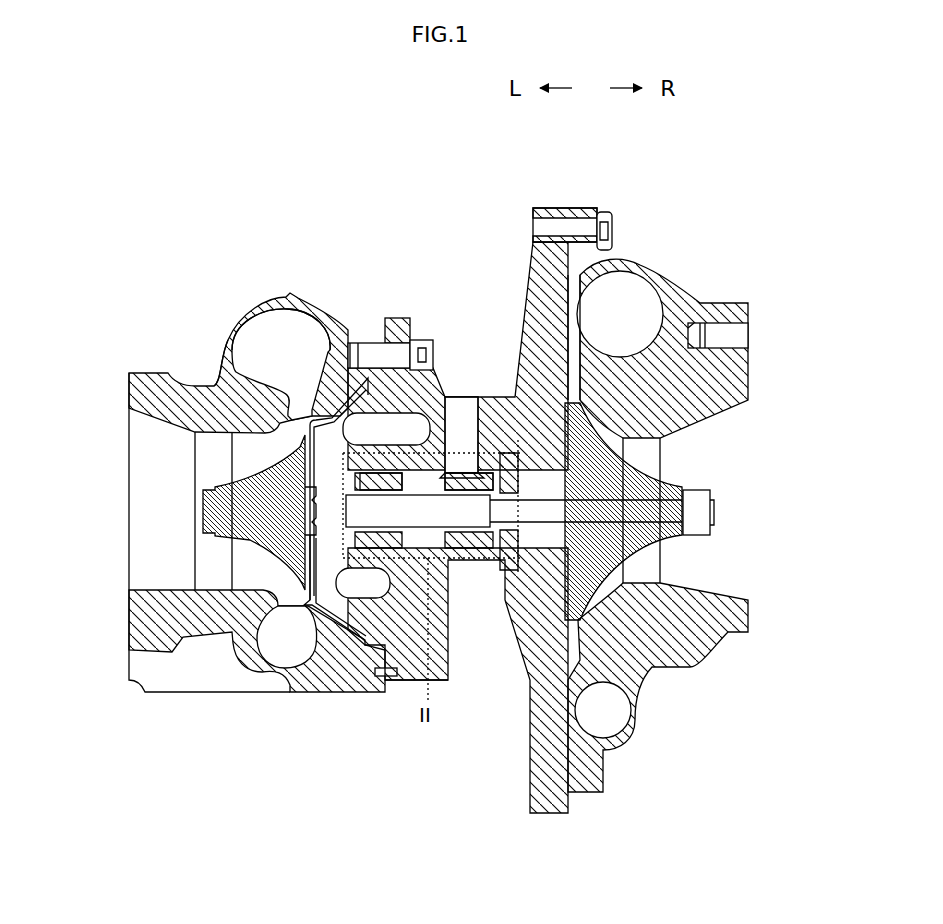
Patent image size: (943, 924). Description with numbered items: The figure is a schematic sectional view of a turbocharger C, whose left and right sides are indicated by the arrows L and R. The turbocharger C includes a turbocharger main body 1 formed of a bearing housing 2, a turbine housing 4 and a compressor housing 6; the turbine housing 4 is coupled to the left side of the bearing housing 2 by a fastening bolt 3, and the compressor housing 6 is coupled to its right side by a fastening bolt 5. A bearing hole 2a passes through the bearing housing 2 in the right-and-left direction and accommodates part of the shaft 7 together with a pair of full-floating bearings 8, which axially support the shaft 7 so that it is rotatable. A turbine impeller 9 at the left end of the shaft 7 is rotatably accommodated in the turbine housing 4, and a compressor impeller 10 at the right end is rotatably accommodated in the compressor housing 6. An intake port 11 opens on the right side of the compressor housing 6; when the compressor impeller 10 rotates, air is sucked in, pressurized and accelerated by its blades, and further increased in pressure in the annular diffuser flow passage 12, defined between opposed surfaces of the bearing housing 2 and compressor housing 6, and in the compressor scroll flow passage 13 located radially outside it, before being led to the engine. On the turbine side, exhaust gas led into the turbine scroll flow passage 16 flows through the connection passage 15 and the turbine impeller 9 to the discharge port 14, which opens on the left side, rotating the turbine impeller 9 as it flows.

The turbocharger main body 1 is at (197, 216).
The turbocharger C is at (150, 148).
The bearing housing 2 is at (440, 398).
The bearing hole 2a is at (437, 537).
The fastening bolt 3 is at (424, 342).
The turbine housing 4 is at (322, 316).
The fastening bolt 5 is at (600, 212).
The compressor housing 6 is at (720, 322).
The shaft 7 is at (416, 525).
The full-floating bearings 8 is at (456, 468).
The turbine impeller 9 is at (300, 530).
The compressor impeller 10 is at (643, 482).
The intake port 11 is at (748, 396).
The diffuser flow passage 12 is at (583, 337).
The compressor scroll flow passage 13 is at (635, 296).
The discharge port 14 is at (128, 410).
The connection passage 15 is at (287, 388).
The turbine scroll flow passage 16 is at (262, 332).